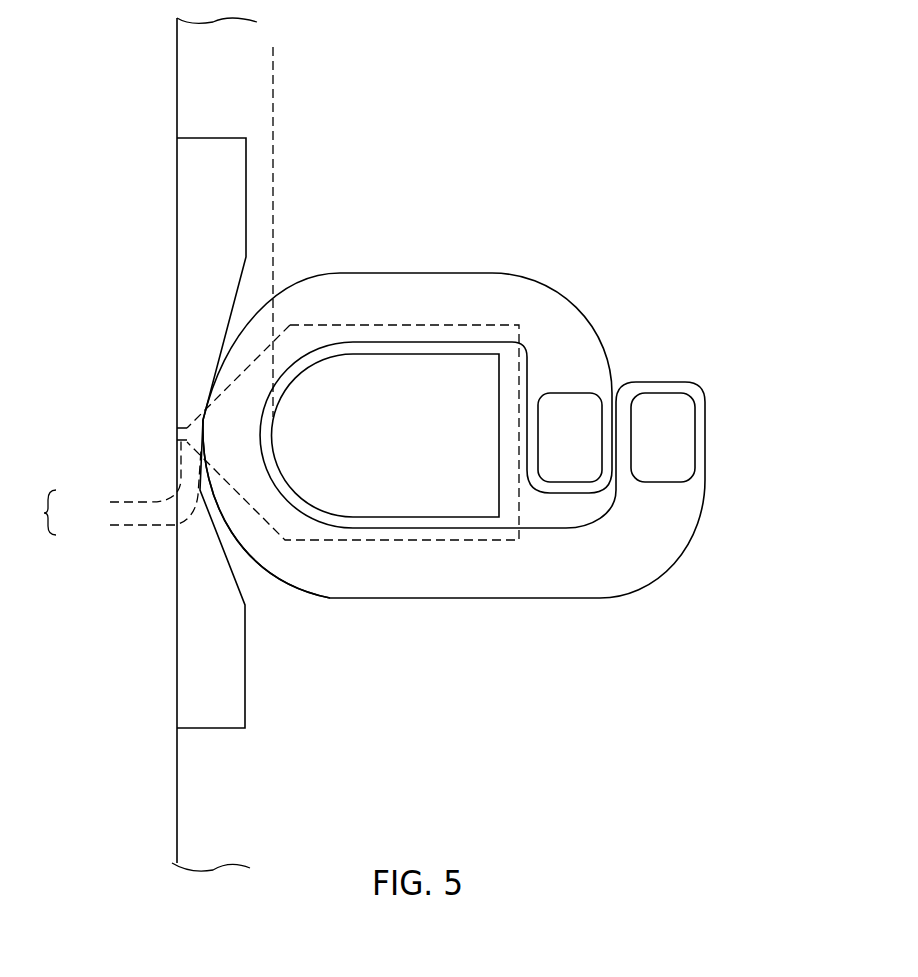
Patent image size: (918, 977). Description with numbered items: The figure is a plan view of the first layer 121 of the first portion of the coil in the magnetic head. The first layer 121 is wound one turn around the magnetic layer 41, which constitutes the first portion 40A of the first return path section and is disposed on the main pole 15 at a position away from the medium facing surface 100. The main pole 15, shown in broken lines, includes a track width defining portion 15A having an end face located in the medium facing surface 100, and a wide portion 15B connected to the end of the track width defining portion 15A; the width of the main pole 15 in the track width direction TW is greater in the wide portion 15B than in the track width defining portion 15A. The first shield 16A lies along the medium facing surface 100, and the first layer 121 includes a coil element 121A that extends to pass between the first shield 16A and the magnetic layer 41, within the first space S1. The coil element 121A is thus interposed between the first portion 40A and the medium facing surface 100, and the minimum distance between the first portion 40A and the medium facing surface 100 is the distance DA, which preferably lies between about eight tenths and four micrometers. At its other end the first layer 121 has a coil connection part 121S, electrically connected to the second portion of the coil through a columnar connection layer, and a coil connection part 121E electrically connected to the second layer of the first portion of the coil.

The medium facing surface 100 is at (176, 52).
The first shield 16A is at (199, 137).
The distance DA is at (273, 90).
The first layer 121 is at (544, 281).
The magnetic layer 41 is at (443, 363).
The first portion 40A is at (353, 340).
The coil connection part 121S is at (573, 403).
The coil connection part 121E is at (685, 435).
The first space S1 is at (199, 414).
The track width direction TW is at (126, 387).
The main pole 15 is at (35, 512).
The track width defining portion 15A is at (121, 476).
The wide portion 15B is at (131, 494).
The coil element 121A is at (235, 433).